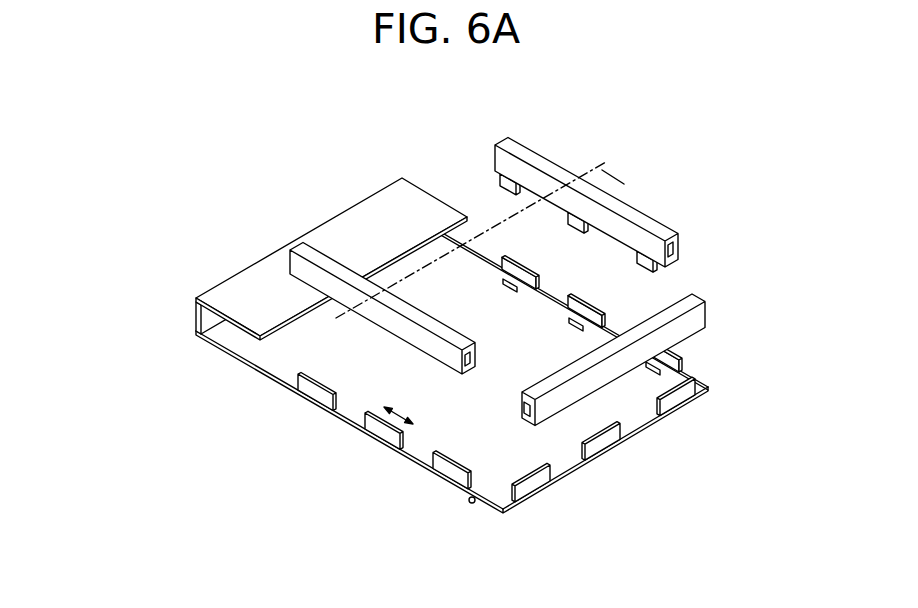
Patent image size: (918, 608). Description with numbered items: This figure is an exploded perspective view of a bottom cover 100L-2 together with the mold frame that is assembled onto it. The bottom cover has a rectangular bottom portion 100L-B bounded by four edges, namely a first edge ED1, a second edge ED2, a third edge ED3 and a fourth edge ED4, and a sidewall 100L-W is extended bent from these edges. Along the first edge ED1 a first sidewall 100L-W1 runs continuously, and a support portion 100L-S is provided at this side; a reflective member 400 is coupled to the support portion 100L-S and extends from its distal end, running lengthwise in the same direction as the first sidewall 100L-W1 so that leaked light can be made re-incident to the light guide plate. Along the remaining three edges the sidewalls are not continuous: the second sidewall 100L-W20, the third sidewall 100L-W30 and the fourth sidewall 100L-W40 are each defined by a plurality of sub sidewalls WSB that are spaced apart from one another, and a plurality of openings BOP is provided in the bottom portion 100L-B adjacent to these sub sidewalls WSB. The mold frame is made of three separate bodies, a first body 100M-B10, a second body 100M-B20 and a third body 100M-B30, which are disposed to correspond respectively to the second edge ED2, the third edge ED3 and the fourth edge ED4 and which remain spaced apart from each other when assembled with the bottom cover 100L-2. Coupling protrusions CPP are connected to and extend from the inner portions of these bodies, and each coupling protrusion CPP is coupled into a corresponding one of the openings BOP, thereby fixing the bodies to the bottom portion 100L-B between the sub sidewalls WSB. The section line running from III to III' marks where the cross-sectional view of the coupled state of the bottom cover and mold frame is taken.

The reflective member 400 is at (410, 237).
The third body 100M-B30 is at (300, 248).
The coupling protrusion CPP is at (497, 176).
The second body 100M-B20 is at (653, 207).
The section line end III' is at (622, 181).
The first body 100M-B10 is at (709, 317).
The third sidewall 100L-W30 is at (606, 311).
The opening BOP is at (512, 276).
The third edge ED3 is at (547, 297).
The first sidewall 100L-W1 is at (196, 318).
The first edge ED1 is at (203, 342).
The support portion 100L-S is at (223, 323).
The bottom portion sidewall 100L-W is at (293, 367).
The bottom cover 100L-2 is at (262, 486).
The bottom portion 100L-B is at (318, 394).
The fourth sidewall 100L-W40 is at (450, 472).
The sub sidewall WSB is at (400, 410).
The fourth edge ED4 is at (472, 497).
The second edge ED2 is at (523, 505).
The second sidewall 100L-W20 is at (680, 402).
The section line III is at (465, 254).